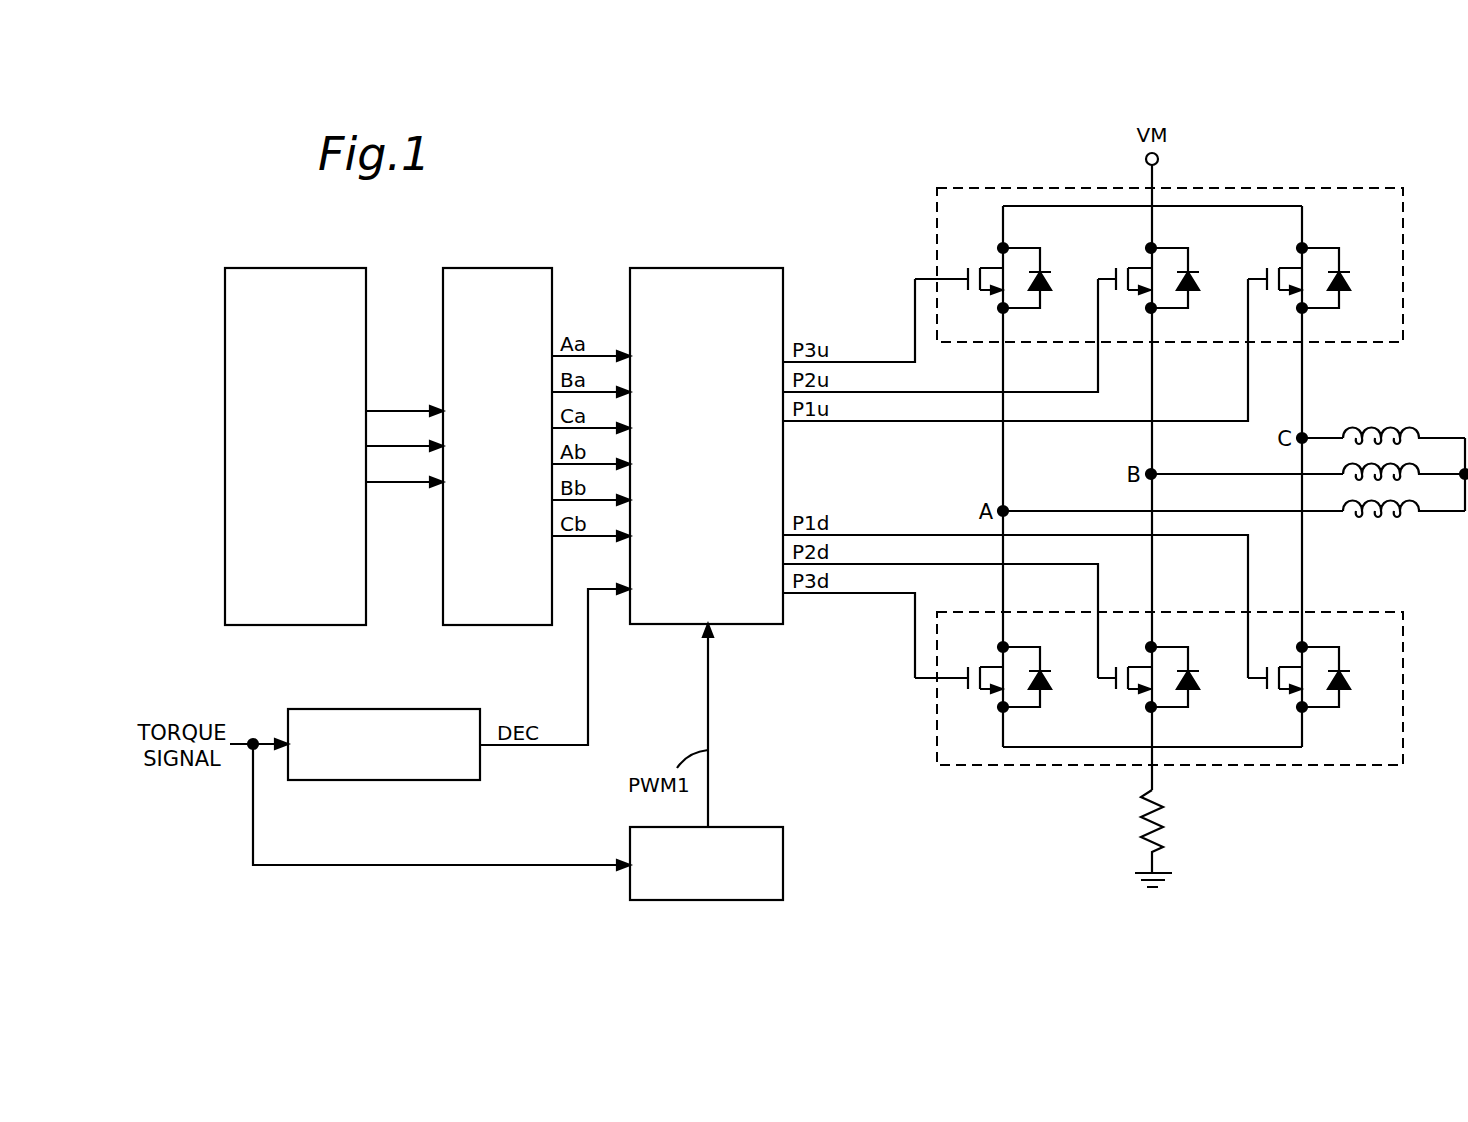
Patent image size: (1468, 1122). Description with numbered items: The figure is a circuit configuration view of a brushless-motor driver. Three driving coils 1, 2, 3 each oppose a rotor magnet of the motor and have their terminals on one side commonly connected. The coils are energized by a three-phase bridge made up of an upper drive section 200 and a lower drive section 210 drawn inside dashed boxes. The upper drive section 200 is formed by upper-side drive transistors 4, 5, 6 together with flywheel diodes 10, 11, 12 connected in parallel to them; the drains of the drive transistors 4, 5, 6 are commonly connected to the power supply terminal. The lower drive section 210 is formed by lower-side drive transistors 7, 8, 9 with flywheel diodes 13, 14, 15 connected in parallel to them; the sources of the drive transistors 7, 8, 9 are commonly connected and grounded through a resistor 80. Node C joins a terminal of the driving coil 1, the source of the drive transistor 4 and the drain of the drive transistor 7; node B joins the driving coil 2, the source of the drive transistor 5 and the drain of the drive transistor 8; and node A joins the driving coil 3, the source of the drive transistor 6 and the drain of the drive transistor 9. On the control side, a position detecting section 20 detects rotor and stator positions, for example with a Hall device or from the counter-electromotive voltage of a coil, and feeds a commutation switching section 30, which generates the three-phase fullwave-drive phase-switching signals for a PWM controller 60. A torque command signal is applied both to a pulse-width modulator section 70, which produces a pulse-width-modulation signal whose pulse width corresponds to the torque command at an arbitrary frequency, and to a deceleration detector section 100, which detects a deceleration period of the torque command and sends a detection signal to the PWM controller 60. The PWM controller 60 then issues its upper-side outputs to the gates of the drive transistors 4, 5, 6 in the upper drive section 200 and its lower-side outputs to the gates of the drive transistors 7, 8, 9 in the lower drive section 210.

The driving coil 1 is at (1412, 428).
The driving coil 2 is at (1412, 466).
The driving coil 3 is at (1412, 501).
The drive transistor 4 is at (1290, 266).
The drive transistor 5 is at (1139, 266).
The drive transistor 6 is at (992, 266).
The drive transistor 7 is at (1290, 664).
The drive transistor 8 is at (1139, 664).
The drive transistor 9 is at (992, 664).
The flywheel diode 10 is at (1346, 270).
The flywheel diode 11 is at (1194, 270).
The flywheel diode 12 is at (1045, 270).
The flywheel diode 13 is at (1346, 668).
The flywheel diode 14 is at (1194, 668).
The flywheel diode 15 is at (1045, 668).
The position detecting section 20 is at (323, 267).
The commutation switching section 30 is at (515, 267).
The PWM controller 60 is at (706, 267).
The pulse-width modulator section 70 is at (747, 827).
The resistor 80 is at (1162, 825).
The deceleration detector section 100 is at (413, 709).
The upper drive section 200 is at (967, 188).
The lower drive section 210 is at (993, 766).